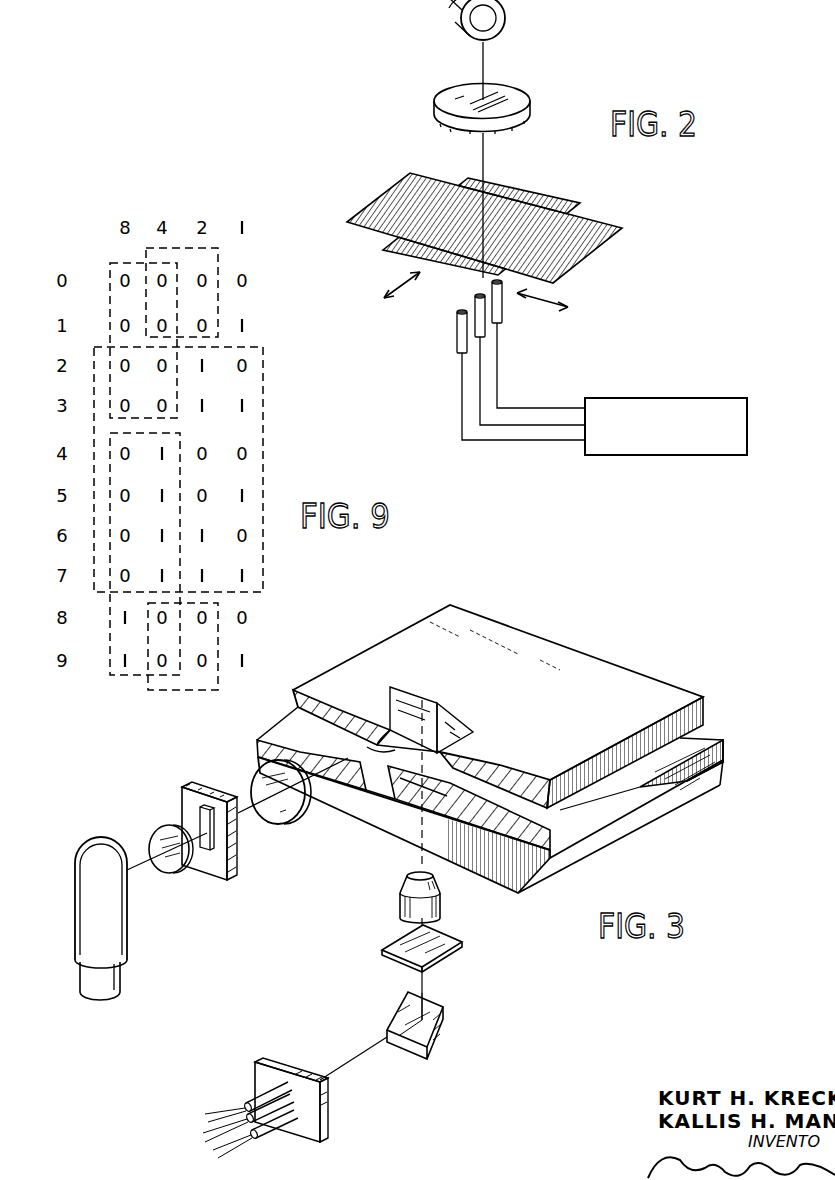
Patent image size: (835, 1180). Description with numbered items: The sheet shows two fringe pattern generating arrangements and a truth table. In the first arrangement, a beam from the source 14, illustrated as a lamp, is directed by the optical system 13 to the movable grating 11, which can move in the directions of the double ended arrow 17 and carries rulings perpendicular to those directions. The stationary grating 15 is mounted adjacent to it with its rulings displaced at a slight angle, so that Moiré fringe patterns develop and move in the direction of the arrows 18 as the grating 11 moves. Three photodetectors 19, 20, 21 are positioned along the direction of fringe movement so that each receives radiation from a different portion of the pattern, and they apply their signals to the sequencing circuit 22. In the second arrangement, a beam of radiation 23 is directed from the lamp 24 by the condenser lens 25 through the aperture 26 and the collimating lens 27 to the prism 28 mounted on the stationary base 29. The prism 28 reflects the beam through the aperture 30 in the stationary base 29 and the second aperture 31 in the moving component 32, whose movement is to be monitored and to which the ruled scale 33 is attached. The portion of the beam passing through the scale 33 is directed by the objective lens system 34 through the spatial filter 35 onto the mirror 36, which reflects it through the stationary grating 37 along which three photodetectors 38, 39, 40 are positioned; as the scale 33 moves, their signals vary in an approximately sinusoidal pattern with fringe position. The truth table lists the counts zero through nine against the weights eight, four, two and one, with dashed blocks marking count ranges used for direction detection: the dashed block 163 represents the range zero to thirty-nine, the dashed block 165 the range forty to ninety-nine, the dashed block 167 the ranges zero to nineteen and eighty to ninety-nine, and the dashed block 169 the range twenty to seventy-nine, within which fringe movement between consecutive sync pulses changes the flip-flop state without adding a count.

In FIG. 2, the movable grating 11 is at (603, 222).
In FIG. 2, the optical system 13 is at (520, 132).
In FIG. 2, the source 14 is at (504, 27).
In FIG. 2, the stationary grating 15 is at (558, 198).
In FIG. 2, the double ended arrow 17 is at (543, 300).
In FIG. 2, the arrows 18 is at (400, 285).
In FIG. 2, the photodetector 19 is at (502, 320).
In FIG. 2, the photodetector 20 is at (484, 334).
In FIG. 2, the photodetector 21 is at (456, 341).
In FIG. 2, the sequencing circuit 22 is at (640, 398).
In FIG. 3, the beam of radiation 23 is at (350, 758).
In FIG. 3, the lamp 24 is at (125, 947).
In FIG. 3, the condenser lens 25 is at (175, 872).
In FIG. 3, the aperture 26 is at (235, 873).
In FIG. 3, the collimating lens 27 is at (273, 827).
In FIG. 3, the prism 28 is at (427, 703).
In FIG. 3, the stationary base 29 is at (673, 687).
In FIG. 3, the aperture 30 is at (447, 756).
In FIG. 3, the second aperture 31 is at (433, 792).
In FIG. 3, the moving component 32 is at (723, 750).
In FIG. 3, the scale 33 is at (408, 788).
In FIG. 3, the objective lens system 34 is at (440, 903).
In FIG. 3, the spatial filter 35 is at (462, 945).
In FIG. 3, the mirror 36 is at (443, 1025).
In FIG. 3, the stationary grating 37 is at (326, 1120).
In FIG. 3, the photodetector 38 is at (281, 1090).
In FIG. 3, the photodetector 39 is at (243, 1112).
In FIG. 3, the photodetector 40 is at (281, 1122).
In FIG. 9, the dashed block 163 is at (110, 306).
In FIG. 9, the dashed block 165 is at (110, 677).
In FIG. 9, the dashed block 167 is at (220, 307).
In FIG. 9, the dashed block 169 is at (263, 440).